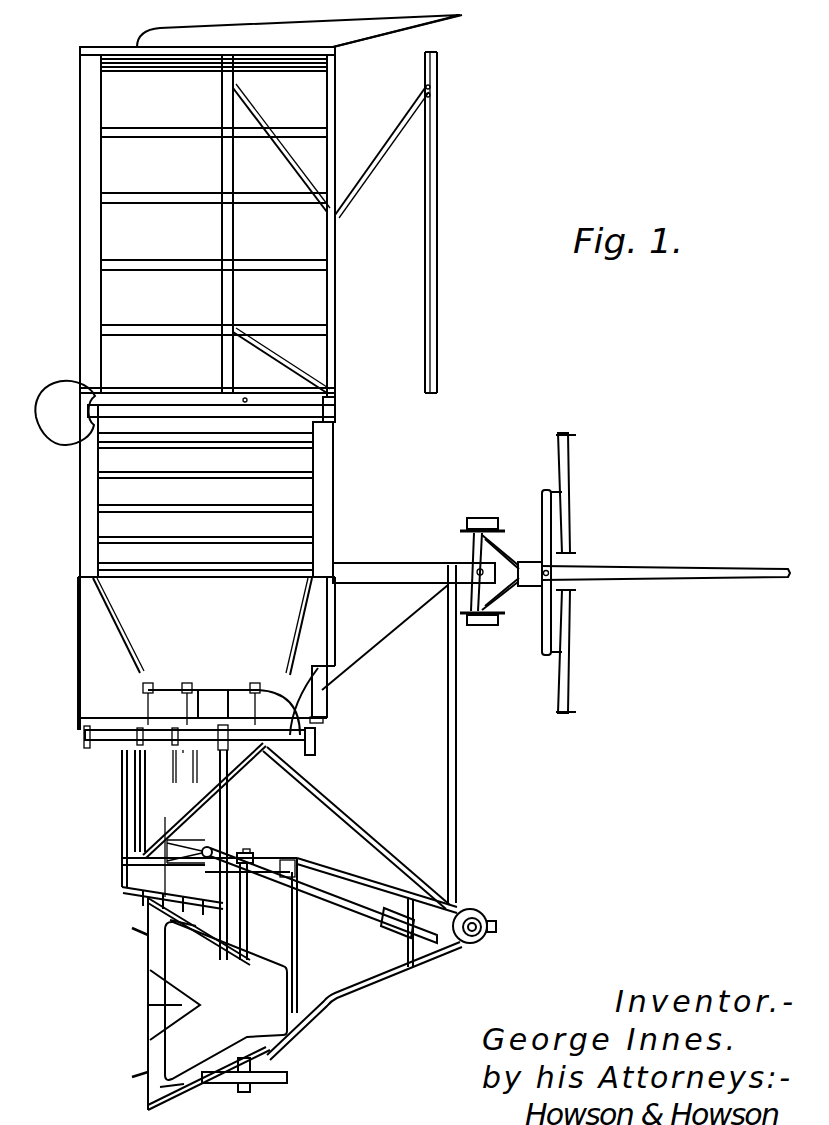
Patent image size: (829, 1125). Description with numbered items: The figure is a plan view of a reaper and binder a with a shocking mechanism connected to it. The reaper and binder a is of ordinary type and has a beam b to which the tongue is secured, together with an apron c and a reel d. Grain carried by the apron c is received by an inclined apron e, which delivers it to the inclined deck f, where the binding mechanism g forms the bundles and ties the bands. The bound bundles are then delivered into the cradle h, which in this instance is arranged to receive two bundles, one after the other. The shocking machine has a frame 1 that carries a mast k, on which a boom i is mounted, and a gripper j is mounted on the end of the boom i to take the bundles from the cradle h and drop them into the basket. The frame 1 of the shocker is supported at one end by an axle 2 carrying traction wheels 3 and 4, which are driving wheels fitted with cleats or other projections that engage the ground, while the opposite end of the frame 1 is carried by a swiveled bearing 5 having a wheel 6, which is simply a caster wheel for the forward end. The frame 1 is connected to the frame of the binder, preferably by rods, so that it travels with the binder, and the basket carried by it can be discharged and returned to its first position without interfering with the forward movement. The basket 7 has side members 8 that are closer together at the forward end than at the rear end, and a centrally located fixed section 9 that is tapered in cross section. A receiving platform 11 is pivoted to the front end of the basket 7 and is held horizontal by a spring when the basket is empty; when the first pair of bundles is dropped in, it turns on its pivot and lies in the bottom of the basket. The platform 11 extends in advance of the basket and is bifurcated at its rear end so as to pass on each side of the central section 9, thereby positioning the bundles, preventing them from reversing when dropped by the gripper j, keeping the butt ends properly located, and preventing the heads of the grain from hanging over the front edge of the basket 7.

The reaper and binder a is at (255, 388).
The beam b is at (387, 562).
The apron c is at (214, 197).
The reel d is at (437, 231).
The inclined apron e is at (205, 491).
The inclined deck f is at (206, 666).
The binding mechanism g is at (212, 708).
The cradle h is at (121, 801).
The boom i is at (258, 868).
The gripper j is at (213, 847).
The mast k is at (400, 929).
The frame 1 is at (380, 977).
The axle 2 is at (248, 914).
The traction wheel 3 is at (288, 1076).
The traction wheel 4 is at (250, 880).
The swiveled bearing 5 is at (473, 935).
The wheel 6 is at (490, 931).
The basket 7 is at (153, 957).
The side members 8 is at (193, 928).
The fixed section 9 is at (158, 997).
The receiving platform 11 is at (226, 1001).